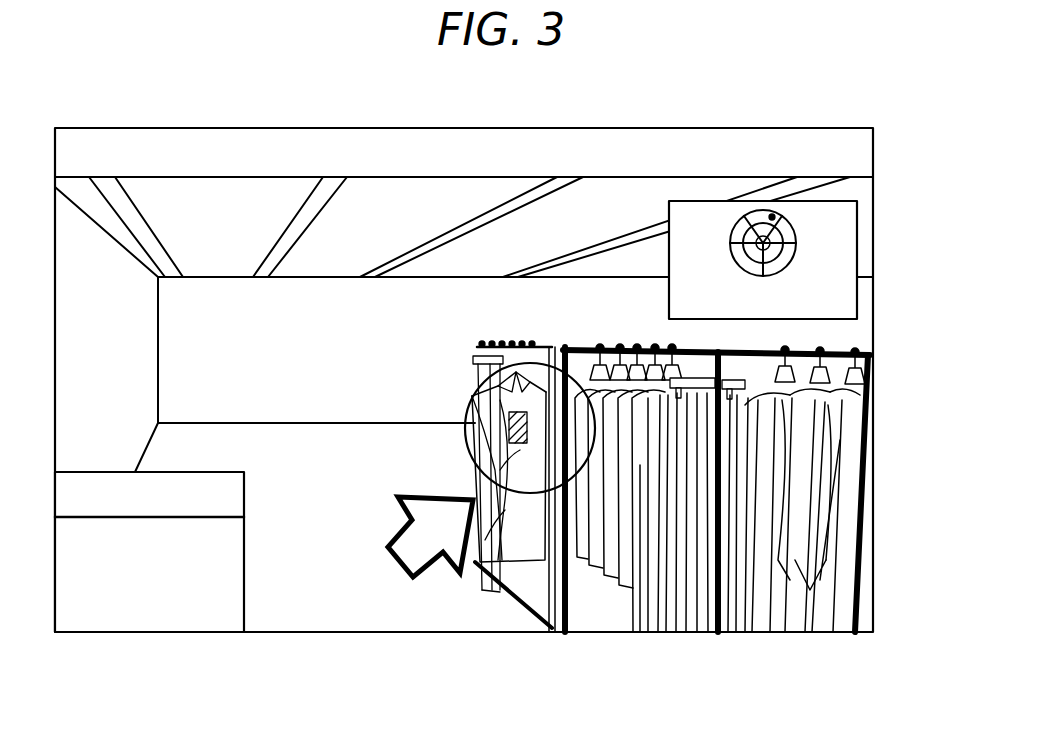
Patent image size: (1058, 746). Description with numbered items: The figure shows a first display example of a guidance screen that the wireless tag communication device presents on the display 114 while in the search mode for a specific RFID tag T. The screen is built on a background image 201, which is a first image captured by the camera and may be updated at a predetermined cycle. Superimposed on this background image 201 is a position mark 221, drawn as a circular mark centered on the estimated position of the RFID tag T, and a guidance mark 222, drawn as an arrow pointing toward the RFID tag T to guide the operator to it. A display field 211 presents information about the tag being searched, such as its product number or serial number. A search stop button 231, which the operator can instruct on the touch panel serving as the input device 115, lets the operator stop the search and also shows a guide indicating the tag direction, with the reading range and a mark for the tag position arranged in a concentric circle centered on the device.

The display 114 is at (464, 353).
The input device 115 is at (645, 138).
The background image 201 is at (857, 427).
The display field 211 is at (155, 620).
The position mark 221 is at (463, 438).
The guidance mark 222 is at (397, 560).
The search stop button 231 is at (846, 257).
The RFID tag T is at (508, 427).